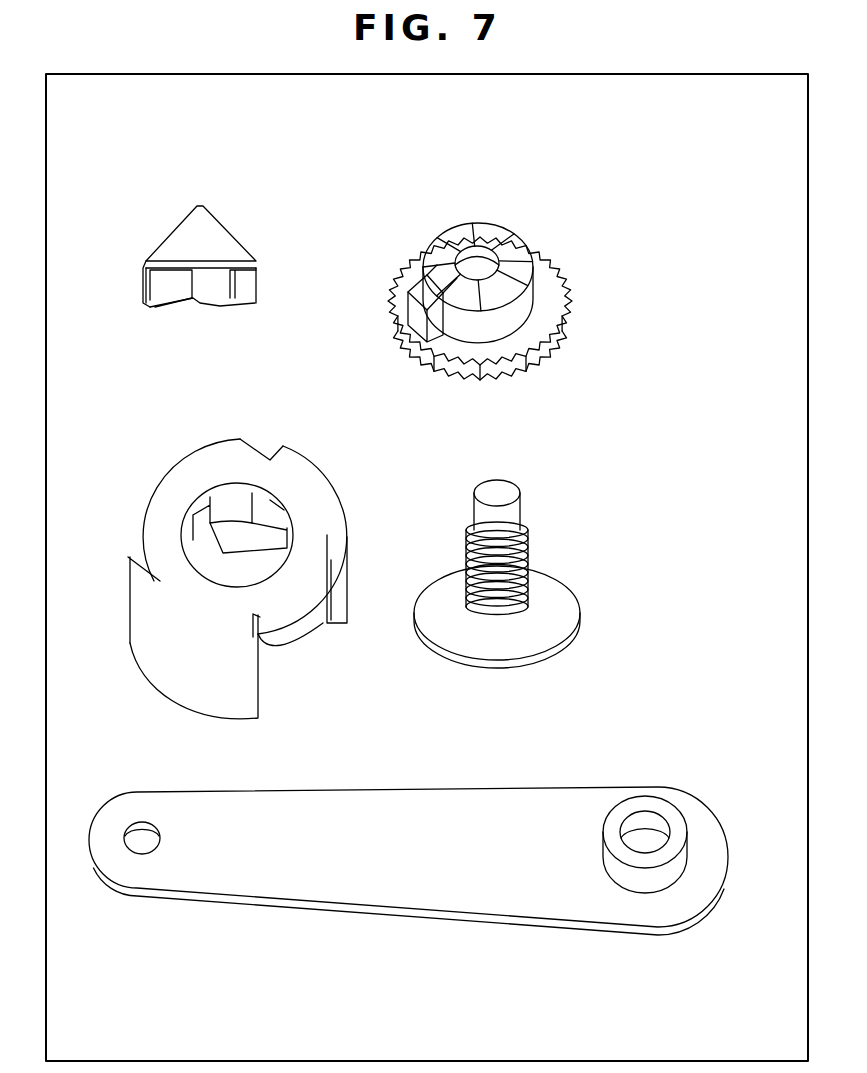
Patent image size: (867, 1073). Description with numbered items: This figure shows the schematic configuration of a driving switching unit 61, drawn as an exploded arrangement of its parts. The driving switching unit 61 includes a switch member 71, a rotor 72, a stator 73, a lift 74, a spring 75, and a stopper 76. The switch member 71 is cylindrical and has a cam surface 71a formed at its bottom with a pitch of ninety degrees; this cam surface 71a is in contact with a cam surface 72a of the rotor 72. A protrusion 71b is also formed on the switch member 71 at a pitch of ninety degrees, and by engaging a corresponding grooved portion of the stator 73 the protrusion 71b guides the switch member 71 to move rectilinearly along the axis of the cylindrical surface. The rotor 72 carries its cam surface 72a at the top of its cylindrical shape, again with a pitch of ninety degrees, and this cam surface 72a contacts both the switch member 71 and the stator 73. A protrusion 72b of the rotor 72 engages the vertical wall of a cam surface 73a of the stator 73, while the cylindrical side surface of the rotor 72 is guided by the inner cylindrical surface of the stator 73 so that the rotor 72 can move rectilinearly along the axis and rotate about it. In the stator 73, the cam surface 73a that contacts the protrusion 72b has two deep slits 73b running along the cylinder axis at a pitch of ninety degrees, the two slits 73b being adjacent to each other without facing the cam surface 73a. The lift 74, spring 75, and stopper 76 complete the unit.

The driving switching unit 61 is at (745, 185).
The switch member 71 is at (128, 203).
The cam surface 71a is at (189, 302).
The protrusion 71b is at (250, 285).
The rotor 72 is at (577, 213).
The cam surface 72a is at (483, 233).
The protrusion 72b is at (440, 357).
The stator 73 is at (118, 435).
The cam surface 73a is at (271, 515).
The slits 73b is at (204, 500).
The lift 74 is at (388, 855).
The spring 75 is at (527, 547).
The stopper 76 is at (572, 605).